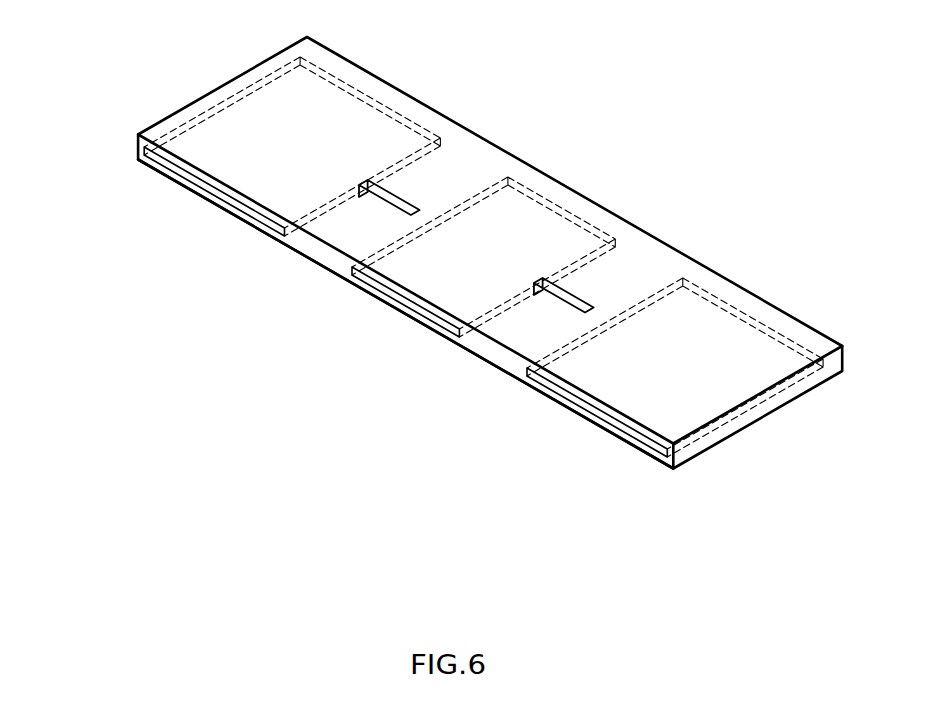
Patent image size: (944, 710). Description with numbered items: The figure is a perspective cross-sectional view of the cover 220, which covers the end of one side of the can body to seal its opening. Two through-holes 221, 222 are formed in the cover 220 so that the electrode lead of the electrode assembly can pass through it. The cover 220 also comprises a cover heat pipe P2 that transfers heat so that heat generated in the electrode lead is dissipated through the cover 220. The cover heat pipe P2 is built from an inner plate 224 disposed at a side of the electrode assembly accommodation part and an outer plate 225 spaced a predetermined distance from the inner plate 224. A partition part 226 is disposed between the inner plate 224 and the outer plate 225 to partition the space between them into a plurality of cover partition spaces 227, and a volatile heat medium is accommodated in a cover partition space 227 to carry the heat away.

The cover 220 is at (637, 183).
The through-hole 221 is at (573, 302).
The through-hole 222 is at (400, 200).
The inner plate 224 is at (573, 404).
The outer plate 225 is at (650, 434).
The partition part 226 is at (493, 348).
The cover partition space 227 is at (408, 303).
The cover heat pipe P2 is at (140, 153).